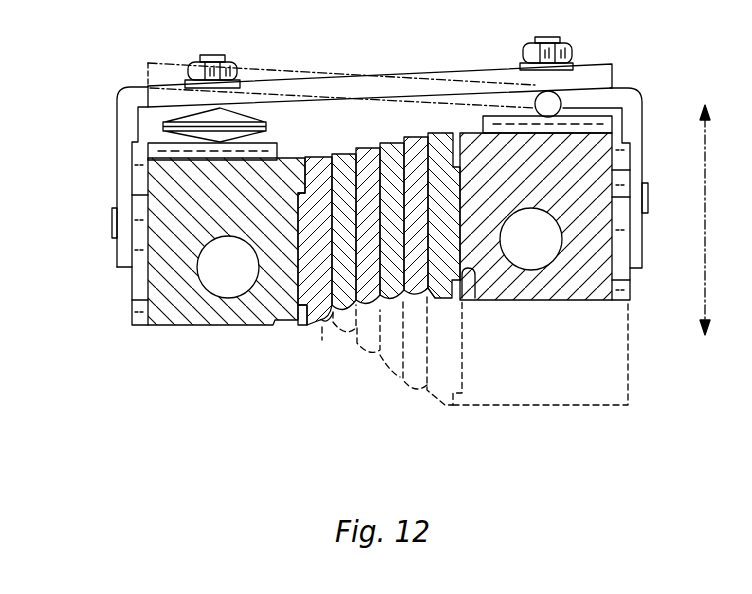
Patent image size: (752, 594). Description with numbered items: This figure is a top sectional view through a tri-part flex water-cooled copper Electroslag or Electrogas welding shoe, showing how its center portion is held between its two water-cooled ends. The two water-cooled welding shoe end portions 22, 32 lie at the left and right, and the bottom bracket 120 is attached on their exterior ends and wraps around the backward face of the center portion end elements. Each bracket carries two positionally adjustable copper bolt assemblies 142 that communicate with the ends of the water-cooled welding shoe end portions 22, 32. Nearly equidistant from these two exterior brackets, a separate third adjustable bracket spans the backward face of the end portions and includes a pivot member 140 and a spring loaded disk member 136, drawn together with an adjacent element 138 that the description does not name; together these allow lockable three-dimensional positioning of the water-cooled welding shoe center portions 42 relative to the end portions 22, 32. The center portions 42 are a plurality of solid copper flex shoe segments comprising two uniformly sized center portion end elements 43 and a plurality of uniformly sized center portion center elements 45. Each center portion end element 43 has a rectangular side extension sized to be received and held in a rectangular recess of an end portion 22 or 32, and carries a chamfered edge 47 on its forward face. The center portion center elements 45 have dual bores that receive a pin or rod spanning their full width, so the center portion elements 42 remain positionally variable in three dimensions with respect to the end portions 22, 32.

The bottom bracket 120 is at (117, 253).
The spring loaded disk member 136 is at (147, 110).
The left spacer plate 138 is at (147, 152).
The pivot member 140 is at (548, 104).
The positionally adjustable copper bolt assembly 142 is at (630, 280).
The water-cooled welding shoe end portion 22 is at (172, 308).
The water-cooled welding shoe end portion 32 is at (578, 278).
The water-cooled welding shoe center portion 42 is at (443, 125).
The center portion end element 43 is at (305, 283).
The center portion center element 45 is at (383, 350).
The chamfered edge 47 is at (333, 313).